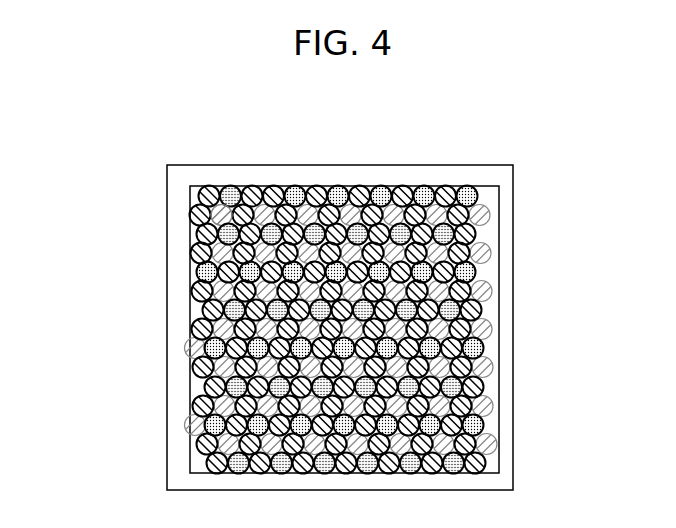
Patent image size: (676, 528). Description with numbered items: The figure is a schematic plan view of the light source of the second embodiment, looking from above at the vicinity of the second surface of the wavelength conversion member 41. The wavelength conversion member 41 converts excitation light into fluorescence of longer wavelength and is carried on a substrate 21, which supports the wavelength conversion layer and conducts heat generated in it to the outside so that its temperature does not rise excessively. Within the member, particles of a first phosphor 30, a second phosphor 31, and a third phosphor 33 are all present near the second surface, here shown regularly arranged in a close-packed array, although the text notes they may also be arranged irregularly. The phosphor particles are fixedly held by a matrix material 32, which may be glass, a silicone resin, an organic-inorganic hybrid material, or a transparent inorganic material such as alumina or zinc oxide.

The wavelength conversion member 41 is at (148, 317).
The substrate 21 is at (178, 440).
The first phosphor 30 is at (273, 191).
The third phosphor 33 is at (338, 191).
The second phosphor 31 is at (218, 213).
The matrix material 32 is at (485, 196).